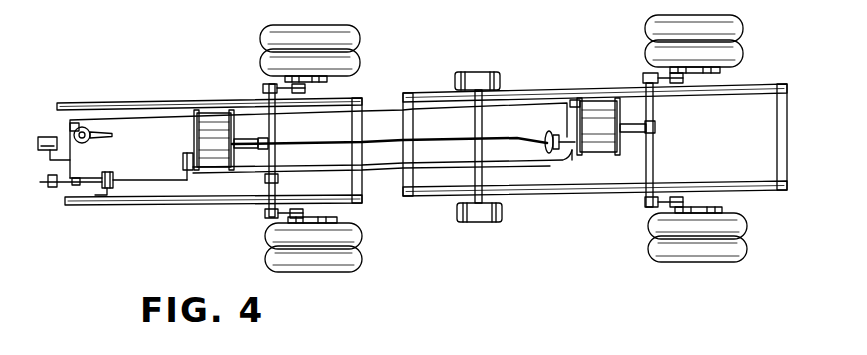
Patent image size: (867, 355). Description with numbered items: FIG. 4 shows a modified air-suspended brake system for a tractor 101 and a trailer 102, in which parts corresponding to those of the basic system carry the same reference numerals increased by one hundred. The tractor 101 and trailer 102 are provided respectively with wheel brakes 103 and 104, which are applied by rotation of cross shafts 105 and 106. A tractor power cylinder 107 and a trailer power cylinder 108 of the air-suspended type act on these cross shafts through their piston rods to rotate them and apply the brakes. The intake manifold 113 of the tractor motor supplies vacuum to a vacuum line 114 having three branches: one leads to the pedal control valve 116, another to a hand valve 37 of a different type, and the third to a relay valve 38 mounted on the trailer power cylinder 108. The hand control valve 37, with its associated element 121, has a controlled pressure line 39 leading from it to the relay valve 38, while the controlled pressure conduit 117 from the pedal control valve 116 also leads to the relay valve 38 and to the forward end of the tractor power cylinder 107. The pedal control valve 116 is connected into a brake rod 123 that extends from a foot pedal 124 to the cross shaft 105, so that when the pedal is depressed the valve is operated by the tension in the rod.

The tractor 101 is at (226, 69).
The trailer 102 is at (533, 90).
The wheel brakes 103 is at (328, 78).
The wheel brakes 104 is at (718, 70).
The cross shaft 105 is at (277, 128).
The cross shaft 106 is at (657, 118).
The tractor power cylinder 107 is at (214, 118).
The trailer power cylinder 108 is at (596, 118).
The intake manifold 113 is at (43, 137).
The vacuum line 114 is at (70, 120).
The pedal control valve 116 is at (113, 174).
The controlled pressure conduit 117 is at (191, 192).
The actuating rod 121 is at (113, 135).
The brake rod 123 is at (143, 183).
The foot pedal 124 is at (53, 188).
The hand control valve 37 is at (85, 128).
The relay valve 38 is at (572, 146).
The controlled pressure line 39 is at (368, 128).